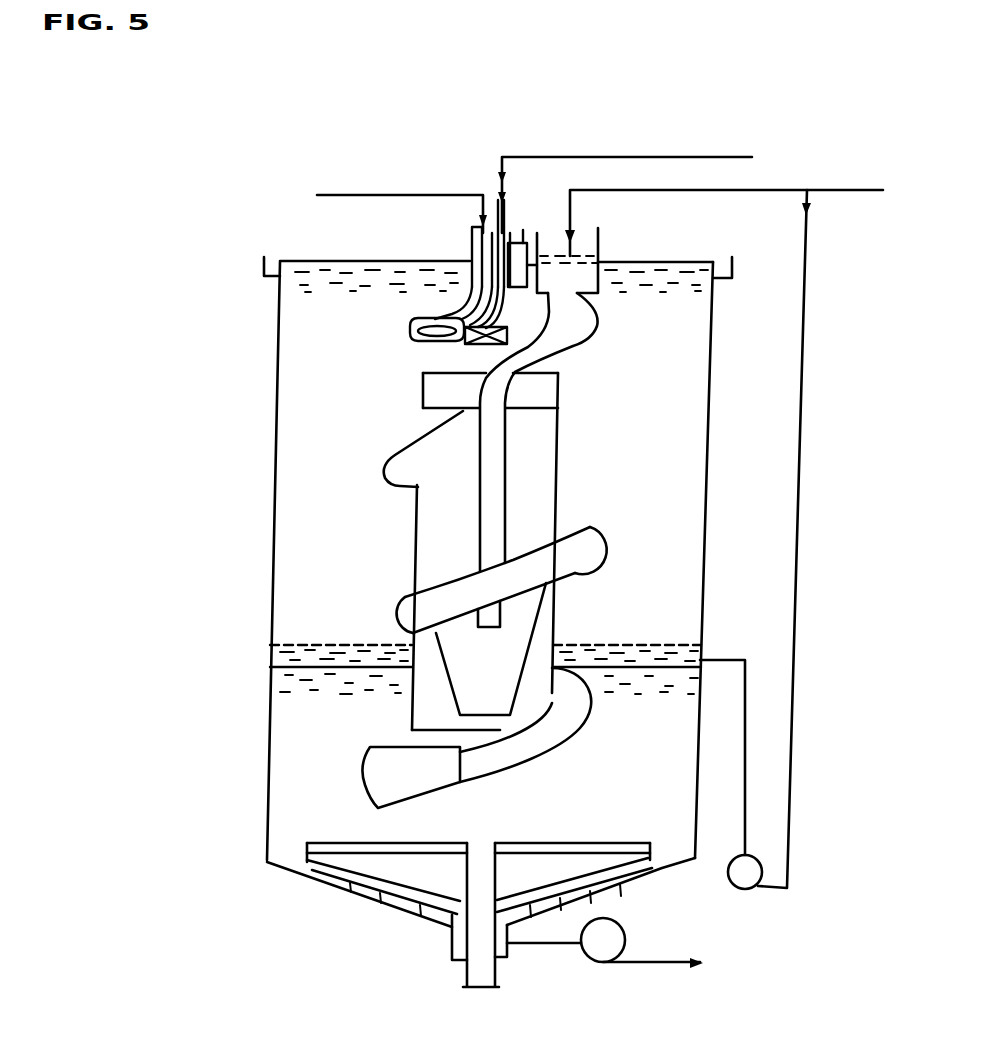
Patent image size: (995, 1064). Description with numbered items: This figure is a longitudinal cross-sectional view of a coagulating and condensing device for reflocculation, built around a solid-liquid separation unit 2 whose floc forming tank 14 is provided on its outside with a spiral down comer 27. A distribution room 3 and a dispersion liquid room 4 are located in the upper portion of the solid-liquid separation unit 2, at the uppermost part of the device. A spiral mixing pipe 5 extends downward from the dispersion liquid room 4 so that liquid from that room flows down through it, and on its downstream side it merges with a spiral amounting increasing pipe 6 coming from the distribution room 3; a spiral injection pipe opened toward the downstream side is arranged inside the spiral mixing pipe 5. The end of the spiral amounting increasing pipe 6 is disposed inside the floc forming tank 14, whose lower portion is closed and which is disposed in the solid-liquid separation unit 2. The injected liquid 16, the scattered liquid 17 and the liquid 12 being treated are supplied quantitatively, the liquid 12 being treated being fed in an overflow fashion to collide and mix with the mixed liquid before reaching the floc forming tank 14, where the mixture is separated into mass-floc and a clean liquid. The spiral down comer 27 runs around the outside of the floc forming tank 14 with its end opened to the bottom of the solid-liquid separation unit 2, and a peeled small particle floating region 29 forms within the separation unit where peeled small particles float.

The solid-liquid separation unit 2 is at (307, 560).
The distribution room 3 is at (581, 258).
The dispersion liquid room 4 is at (470, 233).
The spiral mixing pipe 5 is at (410, 333).
The spiral amounting increasing pipe 6 is at (578, 330).
The liquid being treated 12 is at (778, 190).
The floc forming tank 14 is at (547, 467).
The injected liquid 16 is at (552, 156).
The scattered liquid 17 is at (422, 195).
The spiral down comer 27 is at (580, 545).
The peeled small particle floating region 29 is at (645, 660).